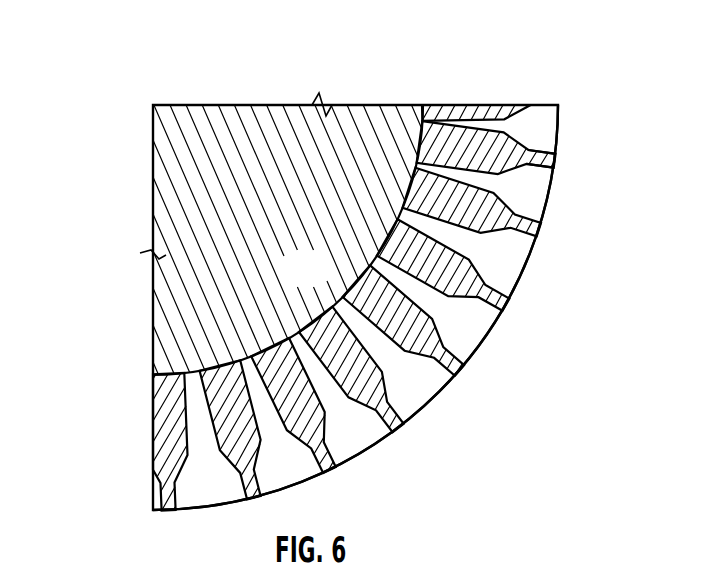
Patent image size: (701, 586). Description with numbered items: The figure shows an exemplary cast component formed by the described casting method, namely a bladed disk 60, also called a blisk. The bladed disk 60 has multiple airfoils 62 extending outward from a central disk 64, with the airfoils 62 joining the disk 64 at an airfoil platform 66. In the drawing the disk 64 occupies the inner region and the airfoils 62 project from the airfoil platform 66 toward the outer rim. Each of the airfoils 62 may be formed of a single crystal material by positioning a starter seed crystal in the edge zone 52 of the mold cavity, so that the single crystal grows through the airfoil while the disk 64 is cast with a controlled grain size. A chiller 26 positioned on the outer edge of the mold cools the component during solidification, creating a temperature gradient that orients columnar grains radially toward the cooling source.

The bladed disk 60 is at (84, 126).
The disk 64 is at (236, 128).
The airfoils 62 is at (488, 120).
The airfoil platform 66 is at (311, 316).
The chiller 26 is at (493, 325).
The edge zone 52 is at (566, 165).